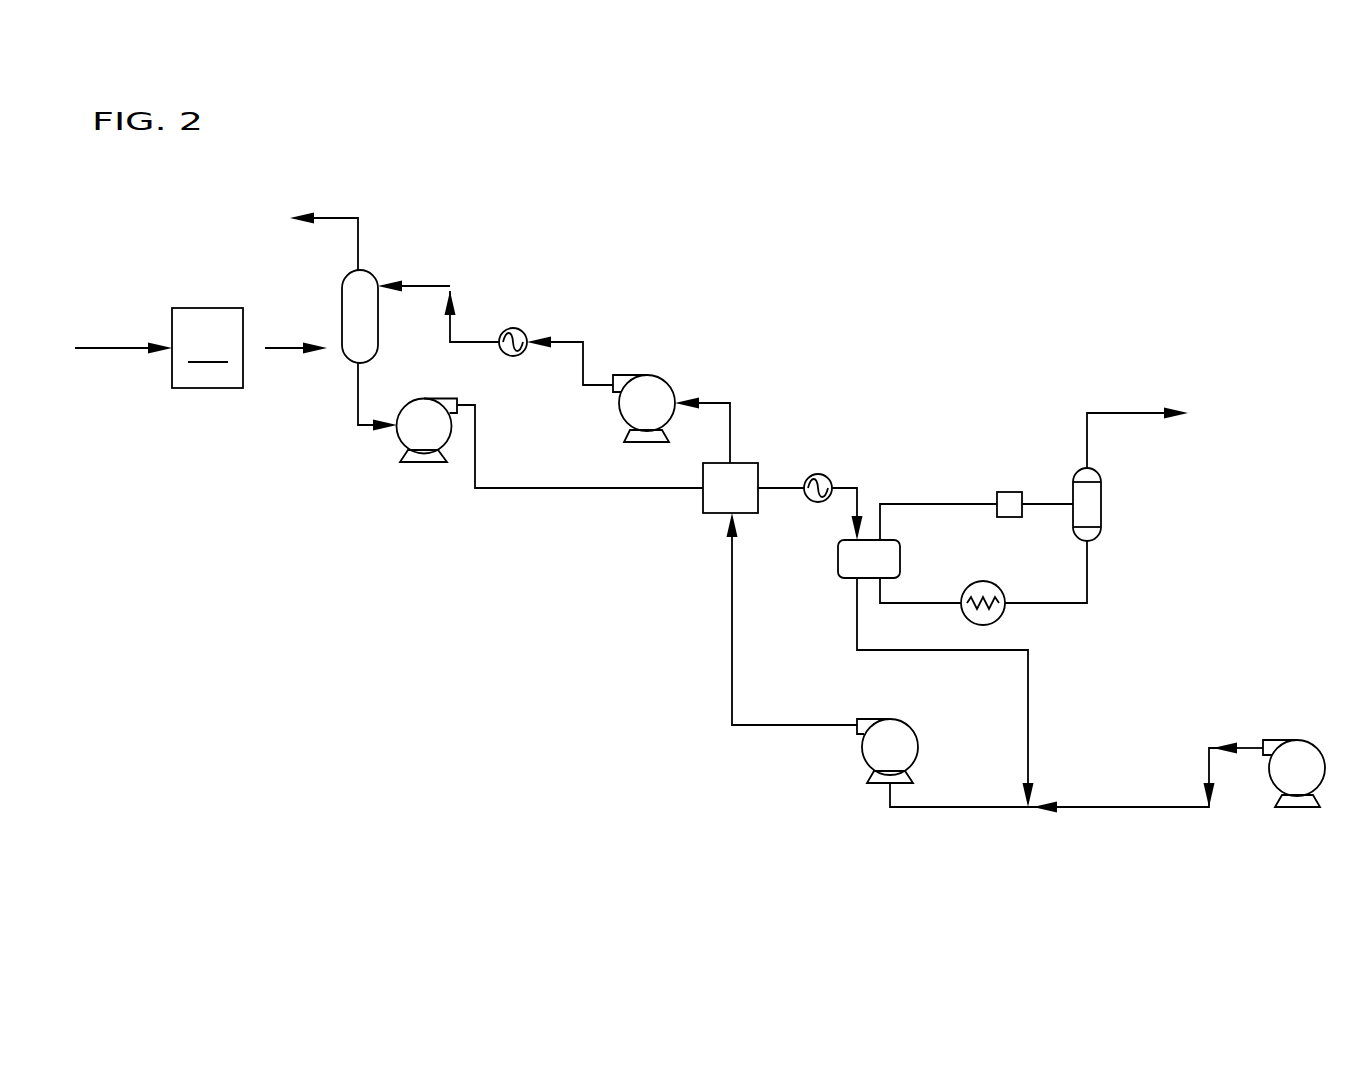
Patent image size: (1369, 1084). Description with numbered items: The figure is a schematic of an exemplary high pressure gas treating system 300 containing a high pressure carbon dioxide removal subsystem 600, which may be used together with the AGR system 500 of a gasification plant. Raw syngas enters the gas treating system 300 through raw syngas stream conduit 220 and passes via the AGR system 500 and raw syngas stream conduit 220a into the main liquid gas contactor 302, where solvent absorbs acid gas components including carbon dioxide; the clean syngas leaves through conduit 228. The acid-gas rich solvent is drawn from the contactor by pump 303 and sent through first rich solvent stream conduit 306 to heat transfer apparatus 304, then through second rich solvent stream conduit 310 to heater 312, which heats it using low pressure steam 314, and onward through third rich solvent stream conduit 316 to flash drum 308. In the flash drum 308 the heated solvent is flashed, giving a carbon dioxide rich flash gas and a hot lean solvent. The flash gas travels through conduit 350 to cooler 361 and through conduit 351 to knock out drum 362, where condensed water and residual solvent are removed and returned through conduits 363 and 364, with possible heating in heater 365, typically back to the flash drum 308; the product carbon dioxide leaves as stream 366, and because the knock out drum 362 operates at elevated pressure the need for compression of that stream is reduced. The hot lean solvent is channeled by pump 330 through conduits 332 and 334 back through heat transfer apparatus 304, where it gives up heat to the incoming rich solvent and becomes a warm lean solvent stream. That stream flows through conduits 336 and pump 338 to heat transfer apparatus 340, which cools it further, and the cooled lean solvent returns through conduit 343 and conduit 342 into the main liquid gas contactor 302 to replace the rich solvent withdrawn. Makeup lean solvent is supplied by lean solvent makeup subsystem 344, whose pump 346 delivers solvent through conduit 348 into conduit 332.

The high pressure gas treating system 300 is at (1057, 208).
The AGR system 500 is at (207, 348).
The raw syngas stream conduit 220 is at (113, 347).
The raw syngas stream conduit 220a is at (288, 350).
The main liquid gas contactor 302 is at (342, 300).
The conduit 228 is at (333, 218).
The pump 303 is at (365, 428).
The first rich solvent stream conduit 306 is at (493, 490).
The heat transfer apparatus 304 is at (712, 515).
The conduits 336 is at (732, 417).
The pump 338 is at (648, 377).
The heat transfer apparatus 340 is at (520, 328).
The conduit 343 is at (462, 343).
The conduit 342 is at (425, 285).
The high pressure carbon dioxide removal subsystem 600 is at (792, 333).
The low pressure steam 314 is at (827, 465).
The second rich solvent stream conduit 310 is at (787, 489).
The heater 312 is at (827, 477).
The third rich solvent stream conduit 316 is at (860, 495).
The flash drum 308 is at (848, 580).
The conduit 350 is at (913, 507).
The cooler 361 is at (1012, 490).
The conduit 351 is at (1048, 505).
The knock out drum 362 is at (1102, 500).
The CO2 stream 366 is at (1115, 412).
The conduit 363 is at (1067, 603).
The heater 365 is at (1000, 617).
The conduit 364 is at (943, 603).
The conduit 332 is at (1028, 810).
The conduit 334 is at (732, 620).
The pump 330 is at (865, 760).
The conduit 348 is at (1177, 807).
The lean solvent makeup subsystem 344 is at (1162, 837).
The pump 346 is at (1285, 740).